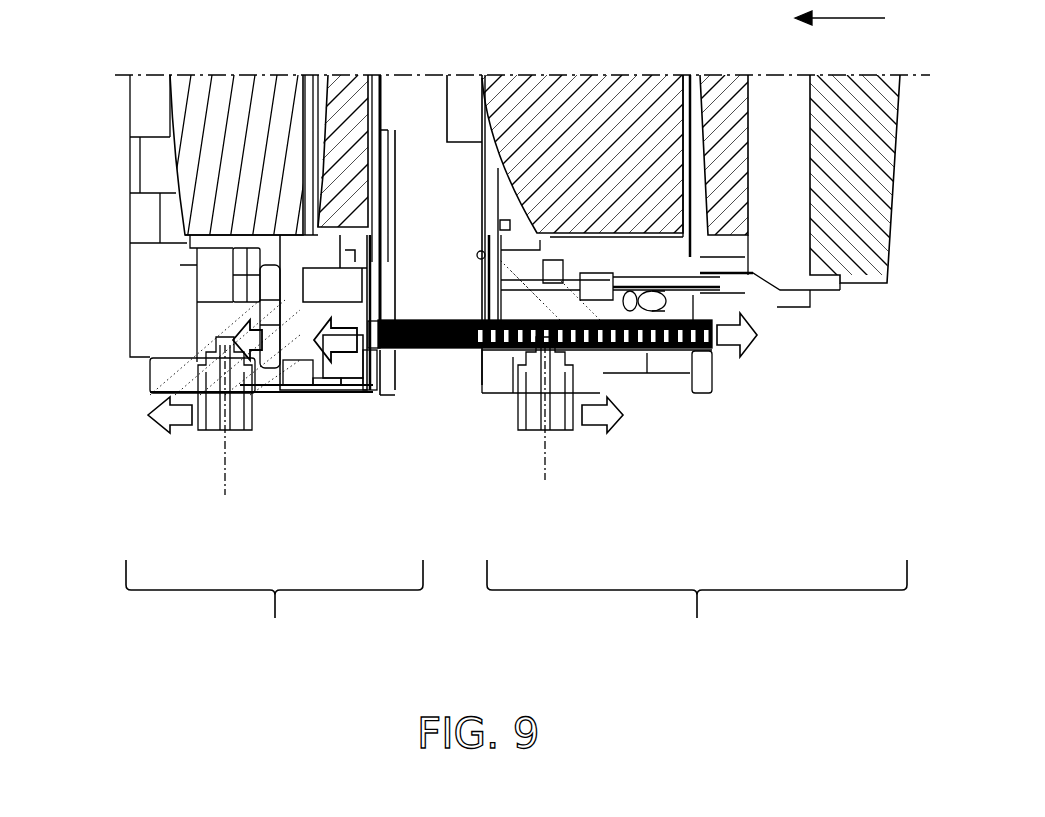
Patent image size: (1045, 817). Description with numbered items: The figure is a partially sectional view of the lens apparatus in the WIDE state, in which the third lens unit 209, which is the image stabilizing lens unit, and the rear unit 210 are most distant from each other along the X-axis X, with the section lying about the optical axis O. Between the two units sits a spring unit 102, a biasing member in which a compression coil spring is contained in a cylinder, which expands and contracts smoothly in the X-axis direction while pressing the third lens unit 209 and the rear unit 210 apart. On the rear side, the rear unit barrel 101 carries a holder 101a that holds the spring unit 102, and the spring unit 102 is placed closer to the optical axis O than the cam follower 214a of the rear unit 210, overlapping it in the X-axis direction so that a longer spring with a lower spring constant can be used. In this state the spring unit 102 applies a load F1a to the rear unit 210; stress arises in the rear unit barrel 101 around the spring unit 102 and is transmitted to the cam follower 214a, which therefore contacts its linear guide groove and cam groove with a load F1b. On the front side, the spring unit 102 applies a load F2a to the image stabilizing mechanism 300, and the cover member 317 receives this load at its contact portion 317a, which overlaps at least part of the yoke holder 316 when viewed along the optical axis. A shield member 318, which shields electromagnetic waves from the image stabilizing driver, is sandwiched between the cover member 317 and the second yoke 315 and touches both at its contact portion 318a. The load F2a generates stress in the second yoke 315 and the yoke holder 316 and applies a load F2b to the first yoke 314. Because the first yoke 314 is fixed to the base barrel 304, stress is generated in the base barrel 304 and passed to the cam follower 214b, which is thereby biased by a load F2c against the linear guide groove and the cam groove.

The optical axis O is at (184, 74).
The X-axis X is at (855, 27).
The rear unit barrel 101 is at (785, 292).
The holder 101a is at (660, 380).
The spring unit 102 is at (437, 350).
The third lens unit 209 is at (274, 606).
The rear unit 210 is at (697, 606).
The cam follower 214a is at (568, 420).
The cam follower 214b is at (202, 430).
The image stabilizing mechanism 300 is at (140, 403).
The base barrel 304 is at (167, 370).
The first yoke 314 is at (240, 313).
The second yoke 315 is at (350, 390).
The yoke holder 316 is at (287, 390).
The cover member 317 is at (385, 392).
The contact portion 317a is at (374, 392).
The shield member 318 is at (320, 390).
The contact portion 318a is at (258, 264).
The load F2a is at (330, 322).
The load F2b is at (232, 337).
The load F2c is at (170, 435).
The load F1a is at (743, 351).
The load F1b is at (611, 430).